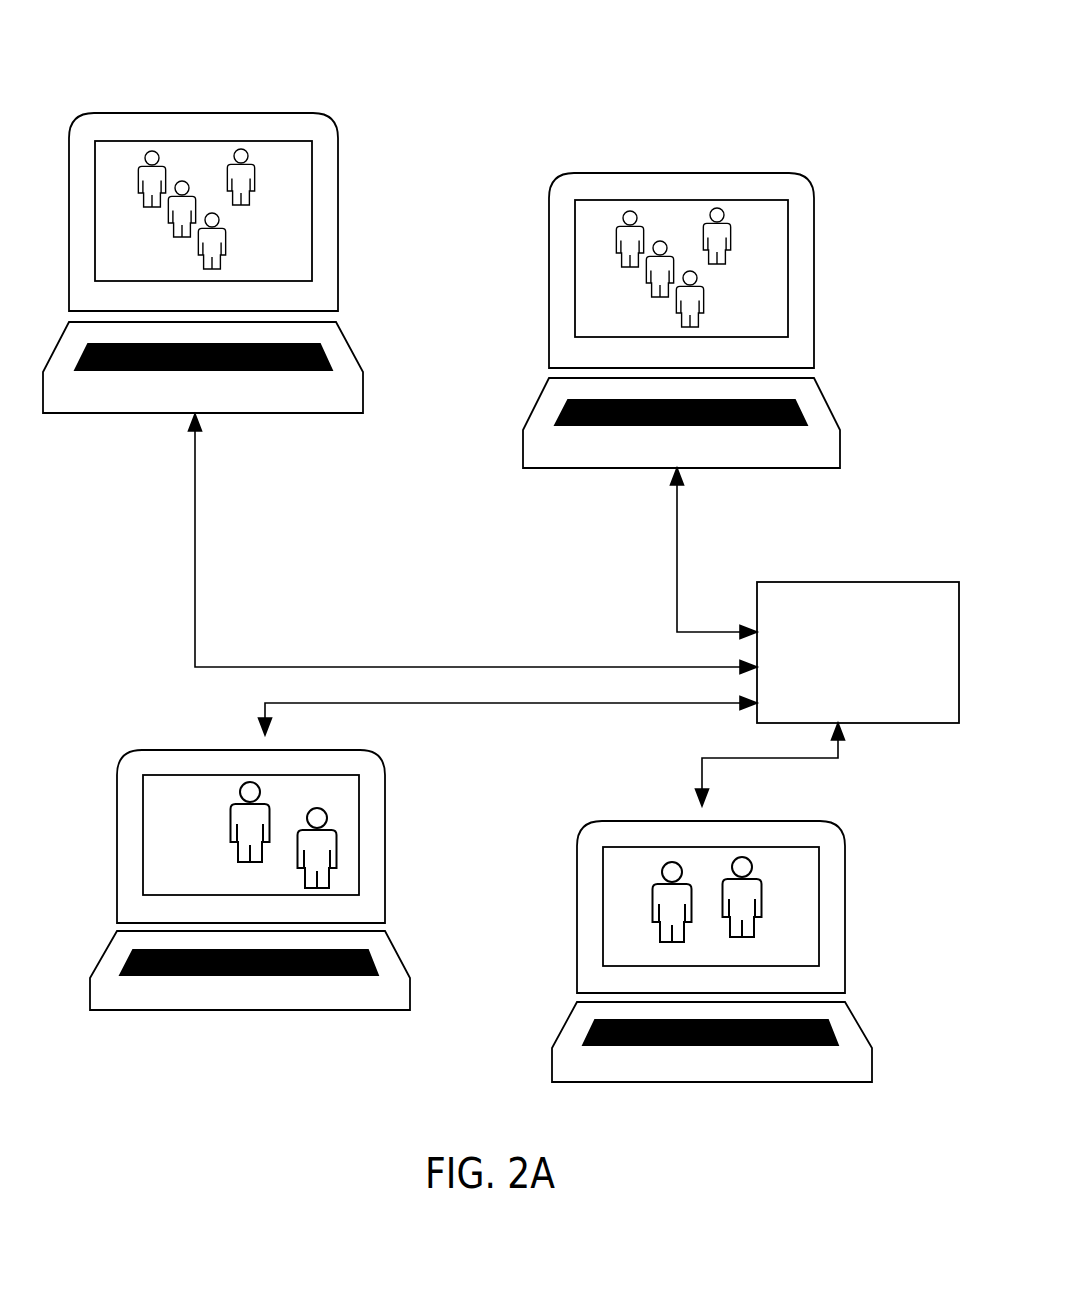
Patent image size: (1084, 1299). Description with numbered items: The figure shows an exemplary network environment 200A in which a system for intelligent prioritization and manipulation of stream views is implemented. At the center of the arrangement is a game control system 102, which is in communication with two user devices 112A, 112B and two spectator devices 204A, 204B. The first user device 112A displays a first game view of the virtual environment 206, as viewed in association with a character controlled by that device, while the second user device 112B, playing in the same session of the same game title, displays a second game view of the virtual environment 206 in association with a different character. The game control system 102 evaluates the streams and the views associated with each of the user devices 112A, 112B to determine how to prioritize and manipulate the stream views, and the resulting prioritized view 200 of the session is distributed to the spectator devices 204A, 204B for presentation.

The network environment 200A is at (842, 50).
The prioritized stream view 200 is at (441, 208).
The virtual environment 206 is at (314, 206).
The spectator device 204A is at (250, 437).
The spectator device 204B is at (792, 487).
The game control system 102 is at (858, 652).
The user device 112A is at (355, 1021).
The user device 112B is at (817, 1091).